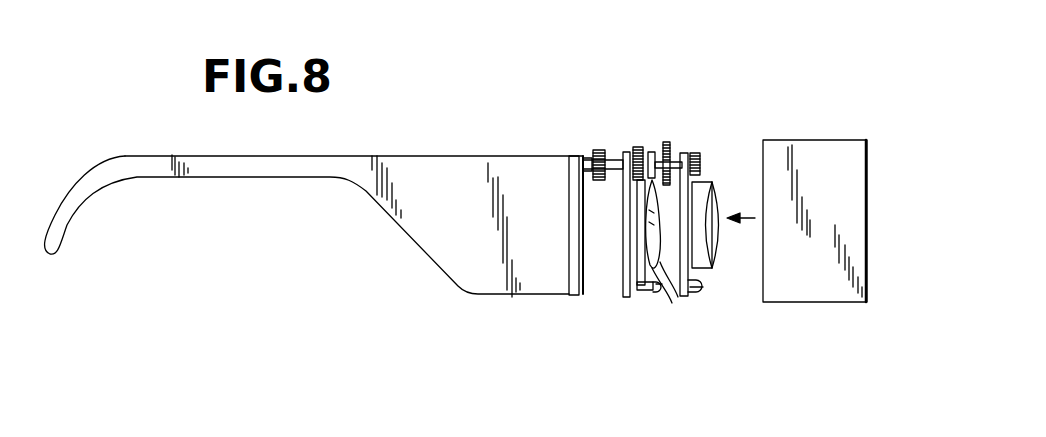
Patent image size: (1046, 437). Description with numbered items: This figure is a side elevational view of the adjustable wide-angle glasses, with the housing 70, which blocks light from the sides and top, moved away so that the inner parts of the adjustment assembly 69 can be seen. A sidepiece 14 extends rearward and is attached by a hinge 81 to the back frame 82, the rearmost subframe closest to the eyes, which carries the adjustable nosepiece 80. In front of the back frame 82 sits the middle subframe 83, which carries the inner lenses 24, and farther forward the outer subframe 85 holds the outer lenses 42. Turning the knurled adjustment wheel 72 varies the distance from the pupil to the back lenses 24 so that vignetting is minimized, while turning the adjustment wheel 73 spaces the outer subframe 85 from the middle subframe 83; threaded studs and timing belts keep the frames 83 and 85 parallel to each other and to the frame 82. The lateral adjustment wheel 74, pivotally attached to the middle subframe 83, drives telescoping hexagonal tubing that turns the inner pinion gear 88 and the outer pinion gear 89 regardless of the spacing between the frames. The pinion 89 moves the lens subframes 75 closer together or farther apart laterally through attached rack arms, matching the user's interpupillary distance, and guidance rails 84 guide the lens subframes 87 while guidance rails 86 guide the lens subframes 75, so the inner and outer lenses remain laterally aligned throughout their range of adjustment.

The sidepieces 14 is at (482, 291).
The inner lenses 24 is at (670, 288).
The outer lenses 42 is at (712, 247).
The lens adjustment assembly 69 is at (748, 60).
The housing 70 is at (837, 150).
The adjustment wheel 72 is at (597, 151).
The adjustment wheel 73 is at (668, 150).
The lateral adjustment wheel 74 is at (638, 147).
The movable subframe 75 is at (693, 177).
The adjustable nosepiece 80 is at (580, 233).
The hinges 81 is at (570, 157).
The back frame 82 is at (577, 293).
The middle subframe 83 is at (618, 288).
The guidance rails 84 is at (648, 295).
The outer subframe 85 is at (680, 291).
The guidance rails 86 is at (703, 287).
The lens subframes 87 is at (660, 287).
The inner pinion gear 88 is at (663, 150).
The outer pinion gear 89 is at (697, 155).